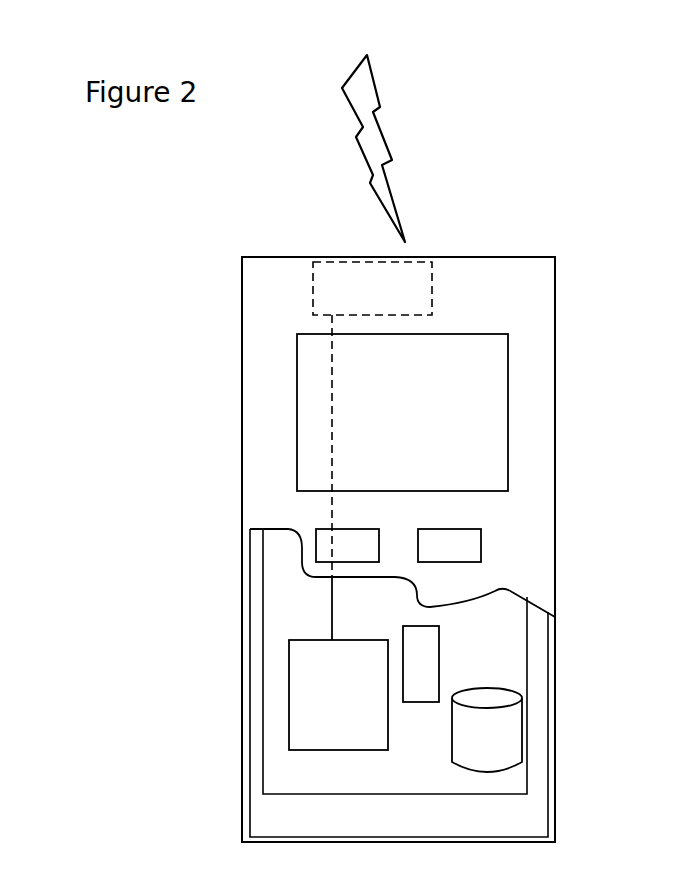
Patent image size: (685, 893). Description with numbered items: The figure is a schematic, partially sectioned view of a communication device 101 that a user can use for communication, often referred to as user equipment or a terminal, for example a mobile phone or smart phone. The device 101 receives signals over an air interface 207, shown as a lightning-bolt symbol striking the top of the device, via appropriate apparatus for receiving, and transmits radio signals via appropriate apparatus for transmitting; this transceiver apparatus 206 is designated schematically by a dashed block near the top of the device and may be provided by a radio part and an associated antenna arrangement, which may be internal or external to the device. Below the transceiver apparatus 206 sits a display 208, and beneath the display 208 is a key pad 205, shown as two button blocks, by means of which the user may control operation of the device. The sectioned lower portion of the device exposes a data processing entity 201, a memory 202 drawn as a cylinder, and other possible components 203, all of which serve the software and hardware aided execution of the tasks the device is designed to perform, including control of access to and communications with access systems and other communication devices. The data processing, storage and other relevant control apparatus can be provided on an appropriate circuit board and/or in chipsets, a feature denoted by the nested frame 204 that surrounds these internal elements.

The communication device 101 is at (242, 305).
The data processing entity 201 is at (289, 675).
The memory 202 is at (508, 770).
The other possible components 203 is at (420, 647).
The circuit board and/or chipsets 204 is at (289, 772).
The key pad 205 is at (318, 532).
The transceiver apparatus 206 is at (432, 287).
The air interface 207 is at (407, 178).
The display 208 is at (315, 397).